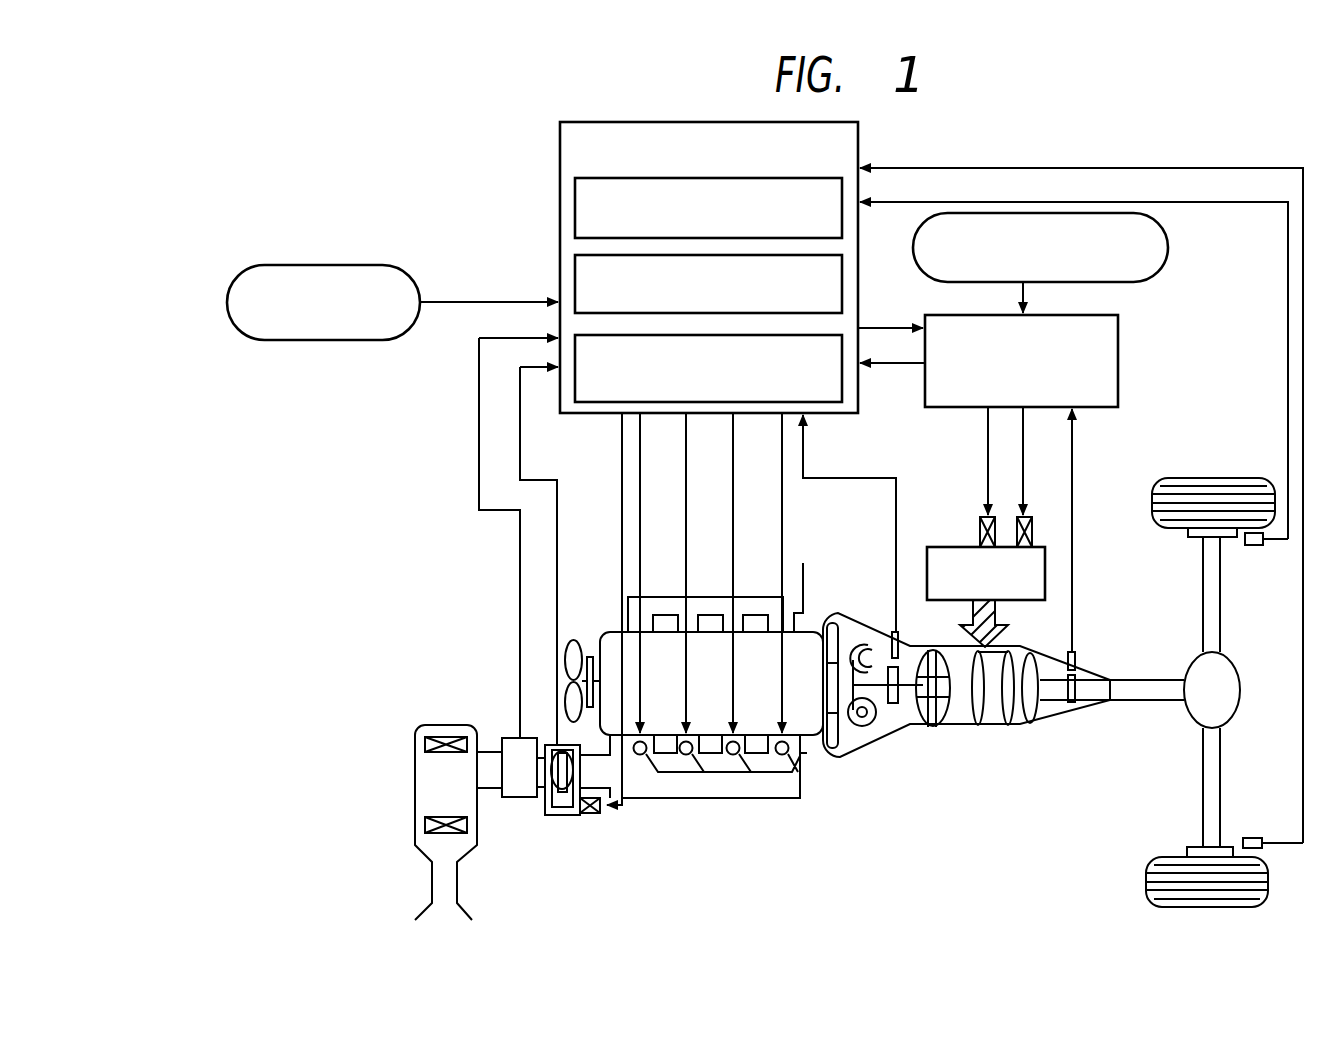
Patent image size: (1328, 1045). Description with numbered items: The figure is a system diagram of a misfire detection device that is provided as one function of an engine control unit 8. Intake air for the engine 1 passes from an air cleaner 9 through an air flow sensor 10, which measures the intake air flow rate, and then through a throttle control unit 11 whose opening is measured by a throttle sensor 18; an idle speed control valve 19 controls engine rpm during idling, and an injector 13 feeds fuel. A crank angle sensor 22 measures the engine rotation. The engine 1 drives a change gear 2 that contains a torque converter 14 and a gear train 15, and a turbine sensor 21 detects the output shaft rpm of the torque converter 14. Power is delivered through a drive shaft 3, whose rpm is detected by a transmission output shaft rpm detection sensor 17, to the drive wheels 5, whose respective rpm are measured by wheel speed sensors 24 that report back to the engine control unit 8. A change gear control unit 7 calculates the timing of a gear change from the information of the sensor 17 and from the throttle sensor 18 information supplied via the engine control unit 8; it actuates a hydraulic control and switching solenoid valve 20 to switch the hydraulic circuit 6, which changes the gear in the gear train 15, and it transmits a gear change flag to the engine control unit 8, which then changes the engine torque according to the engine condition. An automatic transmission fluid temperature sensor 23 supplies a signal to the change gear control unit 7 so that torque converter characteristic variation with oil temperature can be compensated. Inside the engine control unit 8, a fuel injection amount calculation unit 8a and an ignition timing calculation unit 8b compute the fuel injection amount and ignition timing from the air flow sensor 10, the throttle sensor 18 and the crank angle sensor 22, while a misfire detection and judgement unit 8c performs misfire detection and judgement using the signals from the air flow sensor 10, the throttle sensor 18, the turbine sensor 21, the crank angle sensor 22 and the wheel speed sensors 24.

The engine 1 is at (818, 757).
The change gear 2 is at (920, 735).
The drive shaft 3 is at (1145, 700).
The drive wheels 5 is at (1210, 478).
The hydraulic circuit 6 is at (1045, 570).
The change gear control unit 7 is at (1118, 380).
The engine control unit 8 is at (560, 152).
The fuel injection amount calculation unit 8a is at (575, 210).
The ignition timing calculation unit 8b is at (575, 278).
The misfire detection and judgement unit 8c is at (842, 385).
The air cleaner 9 is at (440, 725).
The air flow sensor 10 is at (527, 782).
The throttle control unit 11 is at (565, 815).
The injector 13 is at (645, 742).
The torque converter 14 is at (857, 745).
The gear train 15 is at (975, 725).
The transmission output shaft rpm detection sensor 17 is at (1078, 655).
The throttle sensor 18 is at (557, 745).
The idle speed control valve 19 is at (597, 813).
The hydraulic control and switching solenoid valve 20 is at (980, 522).
The turbine sensor 21 is at (890, 632).
The crank angle sensor 22 is at (330, 265).
The automatic transmission fluid temperature sensor 23 is at (1168, 248).
The wheel speed sensors 24 is at (1255, 548).